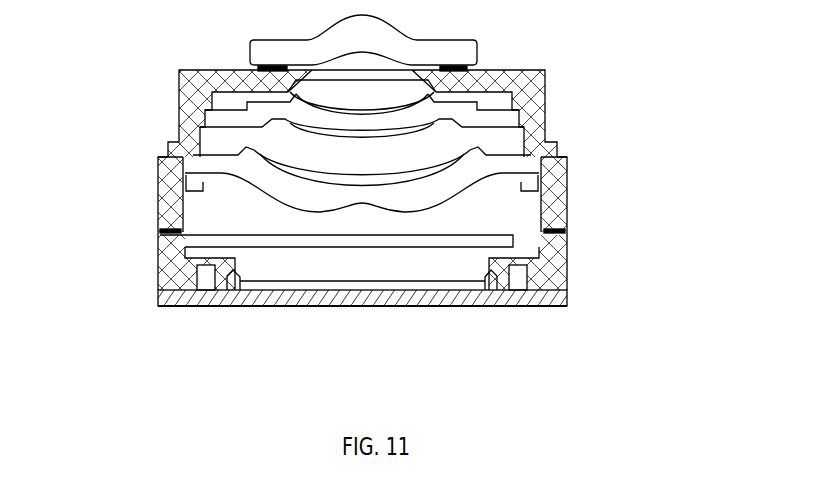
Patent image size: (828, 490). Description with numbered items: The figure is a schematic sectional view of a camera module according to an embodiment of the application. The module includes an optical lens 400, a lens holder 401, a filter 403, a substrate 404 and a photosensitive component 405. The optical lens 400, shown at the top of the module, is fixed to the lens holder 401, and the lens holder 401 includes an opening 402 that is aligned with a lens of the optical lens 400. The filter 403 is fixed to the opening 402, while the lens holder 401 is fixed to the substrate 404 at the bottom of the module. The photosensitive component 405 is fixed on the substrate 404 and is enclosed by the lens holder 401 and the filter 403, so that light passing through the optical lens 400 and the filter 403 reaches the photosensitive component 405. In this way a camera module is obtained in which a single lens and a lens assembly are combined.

The optical lens 400 is at (555, 110).
The lens holder 401 is at (542, 238).
The opening 402 is at (443, 255).
The filter 403 is at (233, 242).
The substrate 404 is at (168, 300).
The photosensitive component 405 is at (357, 283).